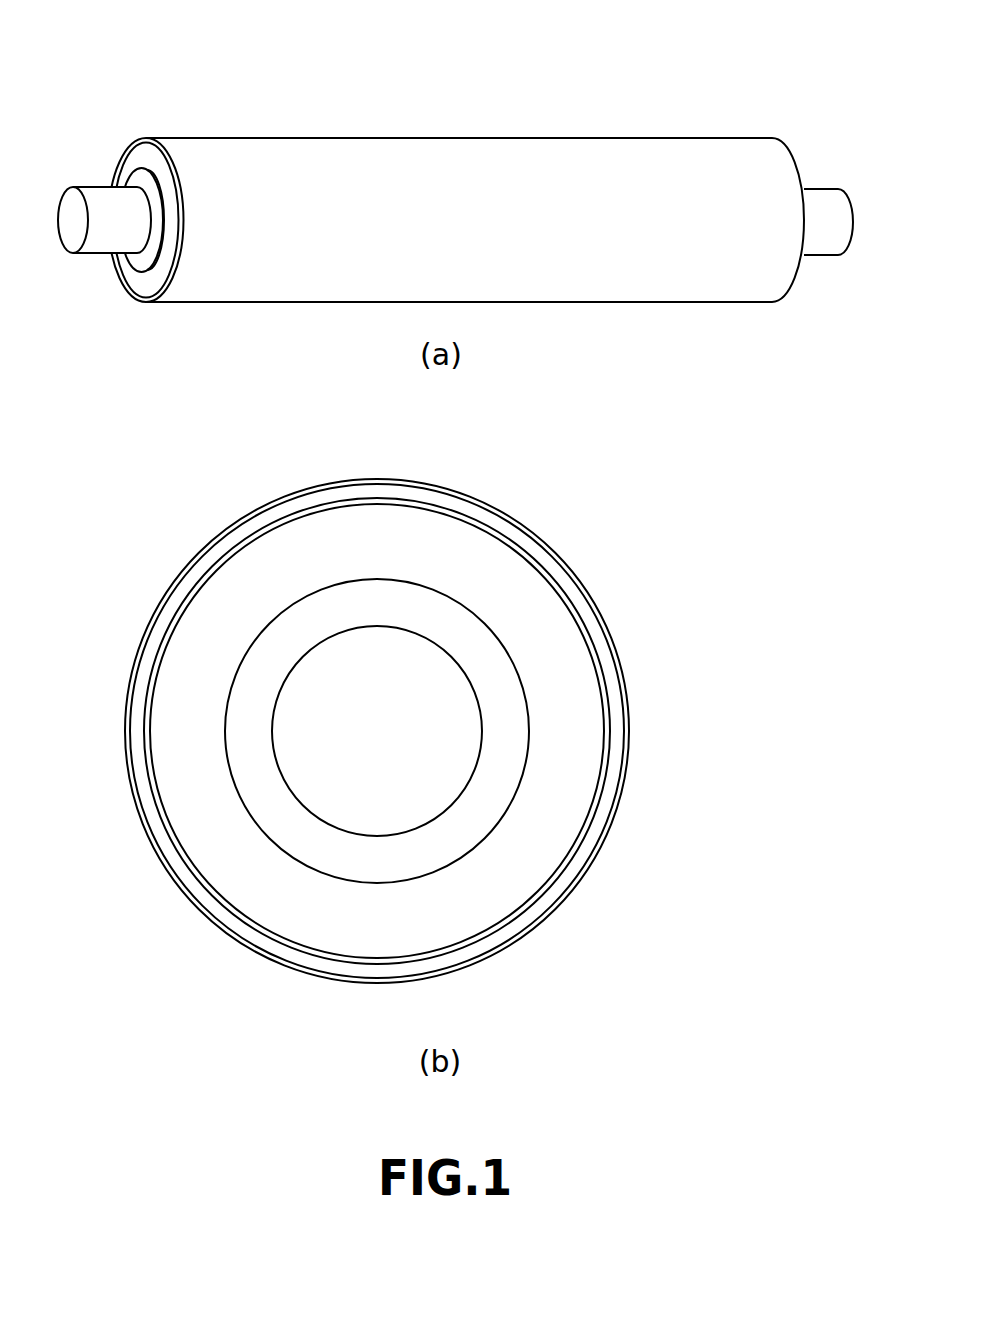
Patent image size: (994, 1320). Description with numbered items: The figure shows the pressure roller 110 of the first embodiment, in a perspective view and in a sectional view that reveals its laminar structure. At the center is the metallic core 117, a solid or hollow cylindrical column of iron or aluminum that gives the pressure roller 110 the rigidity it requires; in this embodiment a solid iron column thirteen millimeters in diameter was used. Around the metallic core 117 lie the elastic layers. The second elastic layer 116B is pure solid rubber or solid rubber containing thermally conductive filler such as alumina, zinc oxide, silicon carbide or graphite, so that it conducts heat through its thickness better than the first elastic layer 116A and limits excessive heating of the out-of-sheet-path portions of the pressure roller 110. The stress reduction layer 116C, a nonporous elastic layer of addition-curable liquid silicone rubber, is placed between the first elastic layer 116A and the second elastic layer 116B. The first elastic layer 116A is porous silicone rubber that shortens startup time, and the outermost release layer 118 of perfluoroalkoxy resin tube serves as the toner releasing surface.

The pressure roller 110 is at (403, 130).
The release layer 118 is at (570, 568).
The first elastic layer 116A is at (595, 628).
The second elastic layer 116B is at (580, 703).
The stress reduction layer 116C is at (602, 780).
The metallic core 117 is at (487, 788).